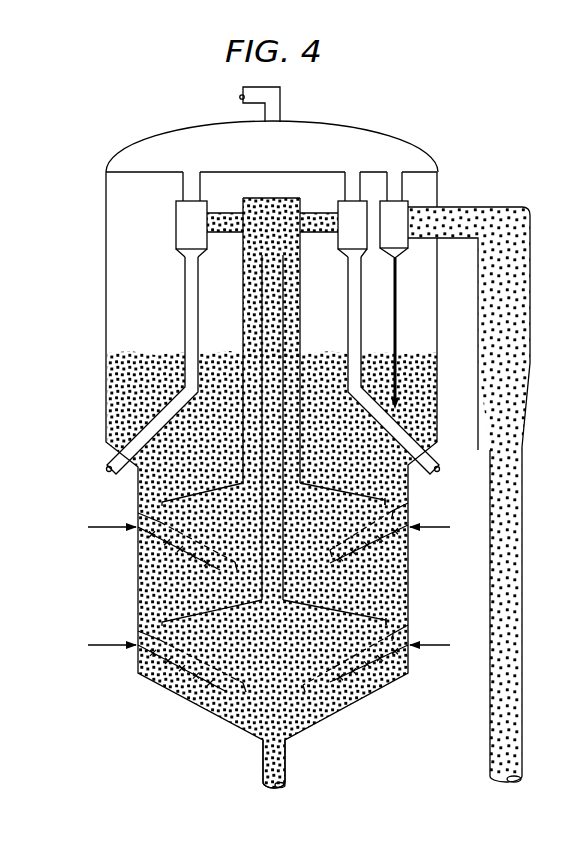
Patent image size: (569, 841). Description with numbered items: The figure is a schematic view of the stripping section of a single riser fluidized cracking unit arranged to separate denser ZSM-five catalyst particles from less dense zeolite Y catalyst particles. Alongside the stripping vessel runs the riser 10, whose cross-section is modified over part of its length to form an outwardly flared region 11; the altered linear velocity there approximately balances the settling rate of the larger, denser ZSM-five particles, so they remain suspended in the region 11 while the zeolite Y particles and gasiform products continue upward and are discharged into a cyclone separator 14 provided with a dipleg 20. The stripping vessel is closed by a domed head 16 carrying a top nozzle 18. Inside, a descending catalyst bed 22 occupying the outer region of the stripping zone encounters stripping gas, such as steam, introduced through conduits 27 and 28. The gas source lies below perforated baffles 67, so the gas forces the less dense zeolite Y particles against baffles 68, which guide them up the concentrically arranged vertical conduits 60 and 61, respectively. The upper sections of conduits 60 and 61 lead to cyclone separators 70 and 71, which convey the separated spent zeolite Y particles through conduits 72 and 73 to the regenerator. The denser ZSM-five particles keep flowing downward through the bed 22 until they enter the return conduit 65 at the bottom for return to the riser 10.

The riser 10 is at (522, 553).
The outwardly flared region 11 is at (510, 305).
The cyclone separator 14 is at (405, 235).
The vessel dome head 16 is at (282, 160).
The vent nozzle 18 is at (280, 98).
The dipleg 20 is at (393, 302).
The descending catalyst bed 22 is at (142, 403).
The stripping gas conduit 27 is at (103, 528).
The stripping gas conduit 28 is at (103, 646).
The vertical conduit 60 is at (253, 443).
The vertical conduit 61 is at (262, 584).
The return conduit 65 is at (286, 761).
The perforated baffle 67 is at (410, 502).
The baffle 68 is at (377, 502).
The cyclone separator 70 is at (202, 235).
The cyclone separator 71 is at (363, 235).
The conduit 72 is at (110, 458).
The conduit 73 is at (440, 466).